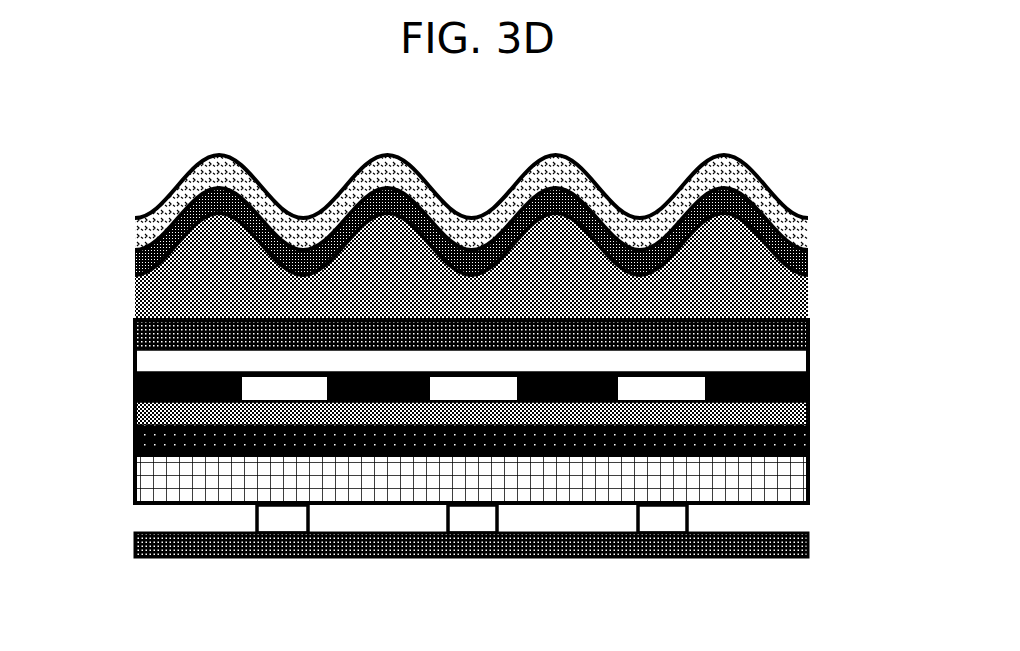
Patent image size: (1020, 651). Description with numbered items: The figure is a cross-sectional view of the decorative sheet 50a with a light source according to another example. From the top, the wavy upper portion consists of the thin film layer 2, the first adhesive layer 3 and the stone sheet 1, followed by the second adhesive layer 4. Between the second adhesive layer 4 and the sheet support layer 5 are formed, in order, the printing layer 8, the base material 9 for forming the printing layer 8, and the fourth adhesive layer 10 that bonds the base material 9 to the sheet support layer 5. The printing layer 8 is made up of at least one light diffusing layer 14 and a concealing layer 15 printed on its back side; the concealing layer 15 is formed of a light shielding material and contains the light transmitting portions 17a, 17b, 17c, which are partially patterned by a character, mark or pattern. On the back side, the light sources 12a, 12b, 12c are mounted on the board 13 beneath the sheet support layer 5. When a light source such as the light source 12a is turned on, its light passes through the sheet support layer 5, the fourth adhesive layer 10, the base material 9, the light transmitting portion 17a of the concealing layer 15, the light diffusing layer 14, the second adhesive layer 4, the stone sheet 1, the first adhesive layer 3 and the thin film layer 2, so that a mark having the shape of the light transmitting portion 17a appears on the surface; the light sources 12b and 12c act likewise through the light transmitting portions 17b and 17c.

The decorative sheet with a light source 50a is at (97, 127).
The stone sheet 1 is at (773, 297).
The thin film layer 2 is at (752, 183).
The first adhesive layer 3 is at (795, 228).
The second adhesive layer 4 is at (808, 318).
The sheet support layer 5 is at (780, 488).
The printing layer 8 is at (123, 352).
The base material 9 is at (782, 418).
The fourth adhesive layer 10 is at (810, 442).
The light source 12a is at (283, 517).
The light source 12b is at (473, 517).
The light source 12c is at (663, 517).
The board 13 is at (810, 537).
The light diffusing layer 14 is at (783, 362).
The concealing layer 15 is at (810, 378).
The light transmitting portion 17a is at (285, 390).
The light transmitting portion 17b is at (475, 388).
The light transmitting portion 17c is at (667, 388).